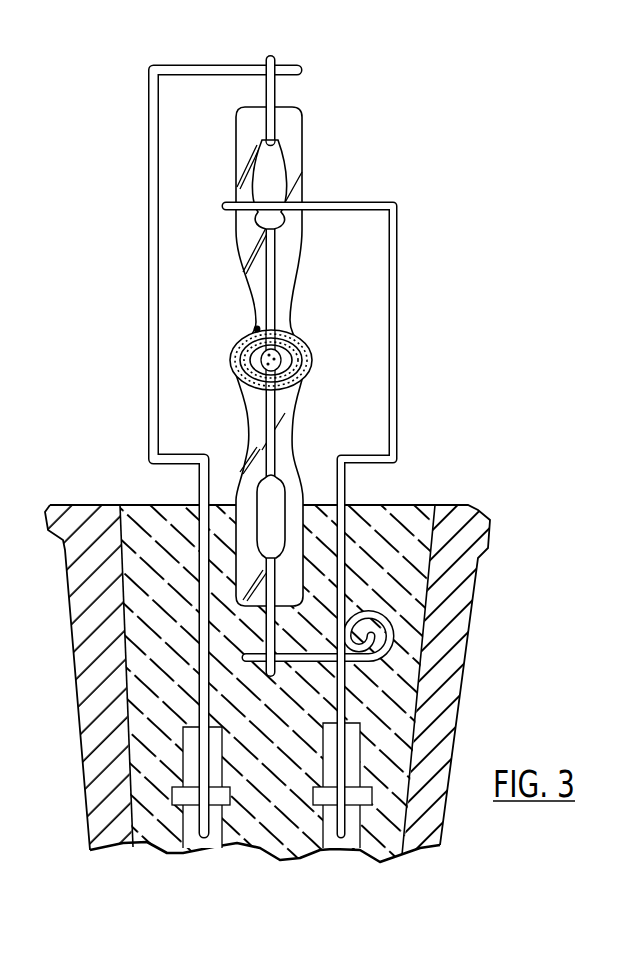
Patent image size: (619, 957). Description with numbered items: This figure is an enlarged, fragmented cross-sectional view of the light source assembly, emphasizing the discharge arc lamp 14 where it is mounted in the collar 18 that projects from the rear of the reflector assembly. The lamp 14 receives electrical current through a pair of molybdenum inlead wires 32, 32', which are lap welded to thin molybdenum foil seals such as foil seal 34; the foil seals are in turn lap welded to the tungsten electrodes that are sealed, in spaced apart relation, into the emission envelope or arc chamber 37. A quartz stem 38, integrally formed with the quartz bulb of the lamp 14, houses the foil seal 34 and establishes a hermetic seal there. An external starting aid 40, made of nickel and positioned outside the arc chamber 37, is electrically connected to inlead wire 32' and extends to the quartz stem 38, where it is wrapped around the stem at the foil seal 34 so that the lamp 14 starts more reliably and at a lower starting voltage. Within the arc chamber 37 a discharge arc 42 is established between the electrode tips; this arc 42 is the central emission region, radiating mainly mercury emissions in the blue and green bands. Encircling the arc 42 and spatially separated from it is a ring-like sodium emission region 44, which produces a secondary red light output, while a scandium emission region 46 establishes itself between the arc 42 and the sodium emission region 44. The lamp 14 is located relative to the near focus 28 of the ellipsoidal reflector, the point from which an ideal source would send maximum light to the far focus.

The discharge arc lamp 14 is at (294, 387).
The collar 18 is at (476, 600).
The near focus 28 is at (255, 325).
The inlead wire 32 is at (317, 358).
The inlead wire 32' is at (318, 673).
The foil seal 34 is at (258, 164).
The arc chamber 37 is at (294, 326).
The quartz stem 38 is at (304, 117).
The external starting aid 40 is at (372, 202).
The discharge arc 42 is at (300, 360).
The sodium emission region 44 is at (243, 338).
The scandium emission region 46 is at (238, 366).